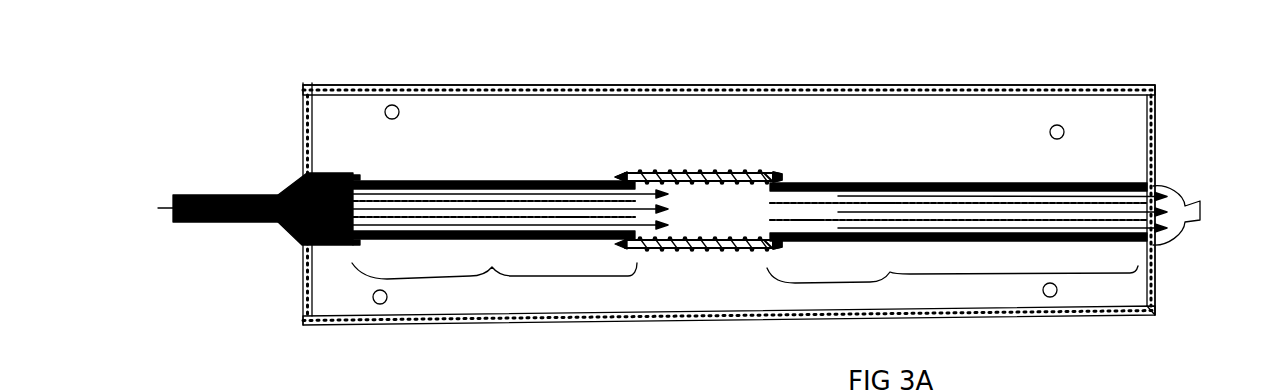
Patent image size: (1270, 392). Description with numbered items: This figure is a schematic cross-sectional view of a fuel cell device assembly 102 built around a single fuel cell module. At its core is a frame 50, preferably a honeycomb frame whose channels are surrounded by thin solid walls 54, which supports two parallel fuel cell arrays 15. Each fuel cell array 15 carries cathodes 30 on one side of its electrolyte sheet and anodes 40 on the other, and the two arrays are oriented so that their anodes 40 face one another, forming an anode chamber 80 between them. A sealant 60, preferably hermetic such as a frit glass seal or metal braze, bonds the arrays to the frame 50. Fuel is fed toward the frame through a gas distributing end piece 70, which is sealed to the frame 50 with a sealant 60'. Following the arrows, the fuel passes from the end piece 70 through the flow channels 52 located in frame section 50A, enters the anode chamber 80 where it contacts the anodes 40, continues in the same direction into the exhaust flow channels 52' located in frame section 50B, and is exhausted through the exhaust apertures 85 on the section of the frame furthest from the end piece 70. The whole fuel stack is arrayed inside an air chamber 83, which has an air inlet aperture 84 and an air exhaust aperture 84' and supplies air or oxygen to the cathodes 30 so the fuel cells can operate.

The optical device 102 is at (729, 157).
The air chamber 83 is at (722, 115).
The air inlet aperture 84 is at (357, 184).
The air exhaust aperture 84' is at (1087, 185).
The gas distributing end piece 70 is at (292, 185).
The sealant 60' is at (375, 198).
The frame 50 is at (420, 180).
The frame section 50A is at (494, 285).
The frame section 50B is at (952, 286).
The flow channel 52 is at (587, 238).
The exhaust flow channel 52' is at (837, 170).
The solid wall 54 is at (498, 217).
The cathode 30 is at (674, 172).
The sealant 60 is at (710, 207).
The fuel cell array 15 is at (764, 172).
The anode 40 is at (679, 239).
The anode chamber 80 is at (708, 218).
The exhaust aperture 85 is at (1176, 187).